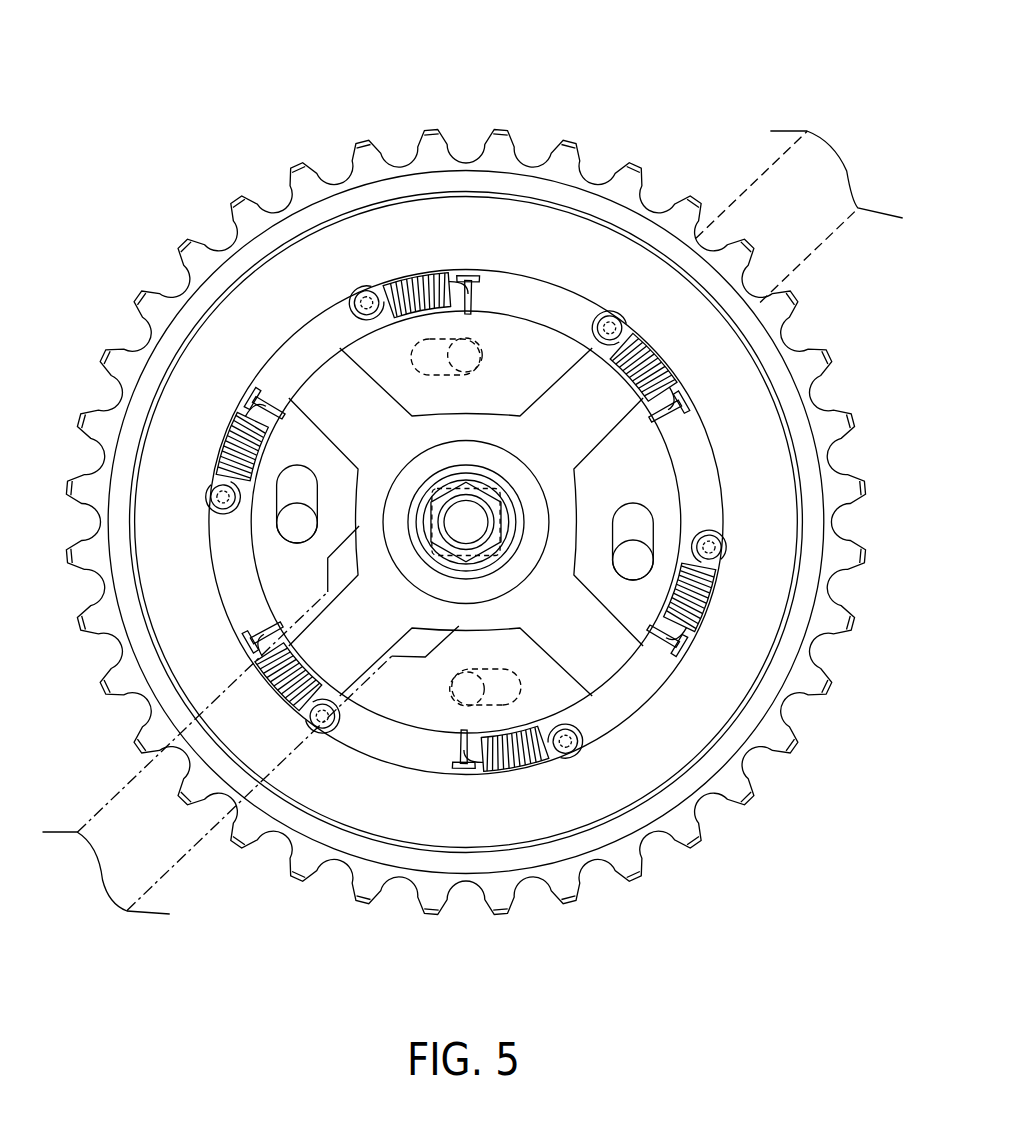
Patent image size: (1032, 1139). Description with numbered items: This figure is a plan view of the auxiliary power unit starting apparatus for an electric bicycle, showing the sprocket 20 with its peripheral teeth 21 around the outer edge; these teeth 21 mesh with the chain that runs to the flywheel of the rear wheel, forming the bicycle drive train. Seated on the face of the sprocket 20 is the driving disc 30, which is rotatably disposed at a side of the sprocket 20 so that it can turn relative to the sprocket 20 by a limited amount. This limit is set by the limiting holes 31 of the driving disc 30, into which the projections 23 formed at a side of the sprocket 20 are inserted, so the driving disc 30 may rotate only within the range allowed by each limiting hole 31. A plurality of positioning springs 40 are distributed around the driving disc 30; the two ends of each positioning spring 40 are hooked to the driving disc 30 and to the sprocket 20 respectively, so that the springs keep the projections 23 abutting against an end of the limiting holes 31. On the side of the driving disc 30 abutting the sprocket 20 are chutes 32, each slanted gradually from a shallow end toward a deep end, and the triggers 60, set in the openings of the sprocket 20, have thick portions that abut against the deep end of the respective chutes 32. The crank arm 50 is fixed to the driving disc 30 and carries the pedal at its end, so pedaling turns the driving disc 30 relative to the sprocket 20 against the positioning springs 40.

The sprocket 20 is at (465, 464).
The peripheral teeth 21 is at (428, 137).
The projections 23 is at (301, 487).
The driving disc 30 is at (680, 430).
The limiting holes 31 is at (636, 519).
The chutes 32 is at (414, 357).
The positioning springs 40 is at (396, 283).
The crank arm 50 is at (167, 861).
The triggers 60 is at (466, 351).